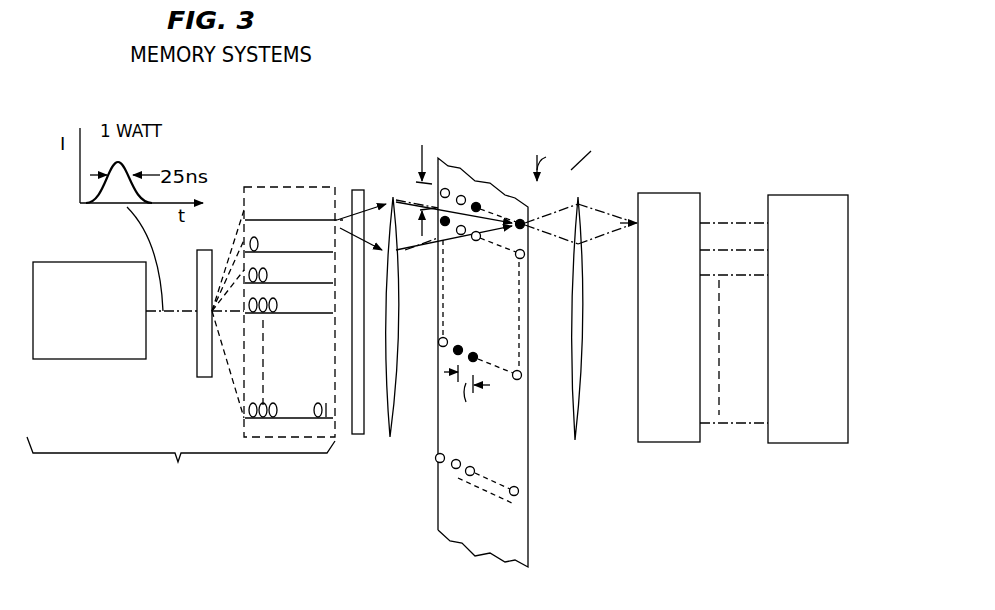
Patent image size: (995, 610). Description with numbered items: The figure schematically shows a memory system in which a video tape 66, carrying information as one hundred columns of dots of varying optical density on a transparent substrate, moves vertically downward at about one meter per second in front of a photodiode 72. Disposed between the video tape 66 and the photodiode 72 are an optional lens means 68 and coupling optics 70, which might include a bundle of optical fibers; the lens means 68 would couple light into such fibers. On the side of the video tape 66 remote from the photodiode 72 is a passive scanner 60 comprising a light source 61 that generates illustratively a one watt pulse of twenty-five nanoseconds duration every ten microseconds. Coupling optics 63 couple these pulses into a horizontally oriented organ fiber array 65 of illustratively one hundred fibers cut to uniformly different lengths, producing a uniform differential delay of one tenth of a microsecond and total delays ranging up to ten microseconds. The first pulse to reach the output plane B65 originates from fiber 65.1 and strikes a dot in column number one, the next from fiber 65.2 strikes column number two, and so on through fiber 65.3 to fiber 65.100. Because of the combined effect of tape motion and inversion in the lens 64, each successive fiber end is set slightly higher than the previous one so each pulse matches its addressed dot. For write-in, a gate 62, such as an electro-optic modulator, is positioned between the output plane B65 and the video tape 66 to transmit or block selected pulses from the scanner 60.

The passive scanner 60 is at (181, 466).
The light source 61 is at (86, 262).
The gate 62 is at (360, 437).
The coupling optics 63 is at (205, 357).
The lens 64 is at (391, 440).
The organ fiber array 65 is at (284, 277).
The fiber 65.1 is at (289, 209).
The fiber 65.2 is at (289, 240).
The fiber 65.3 is at (289, 271).
The fiber 65.100 is at (289, 396).
The output plane B65 is at (335, 200).
The video tape 66 is at (481, 180).
The lens means 68 is at (577, 440).
The coupling optics 70 is at (667, 462).
The photodiode 72 is at (805, 197).